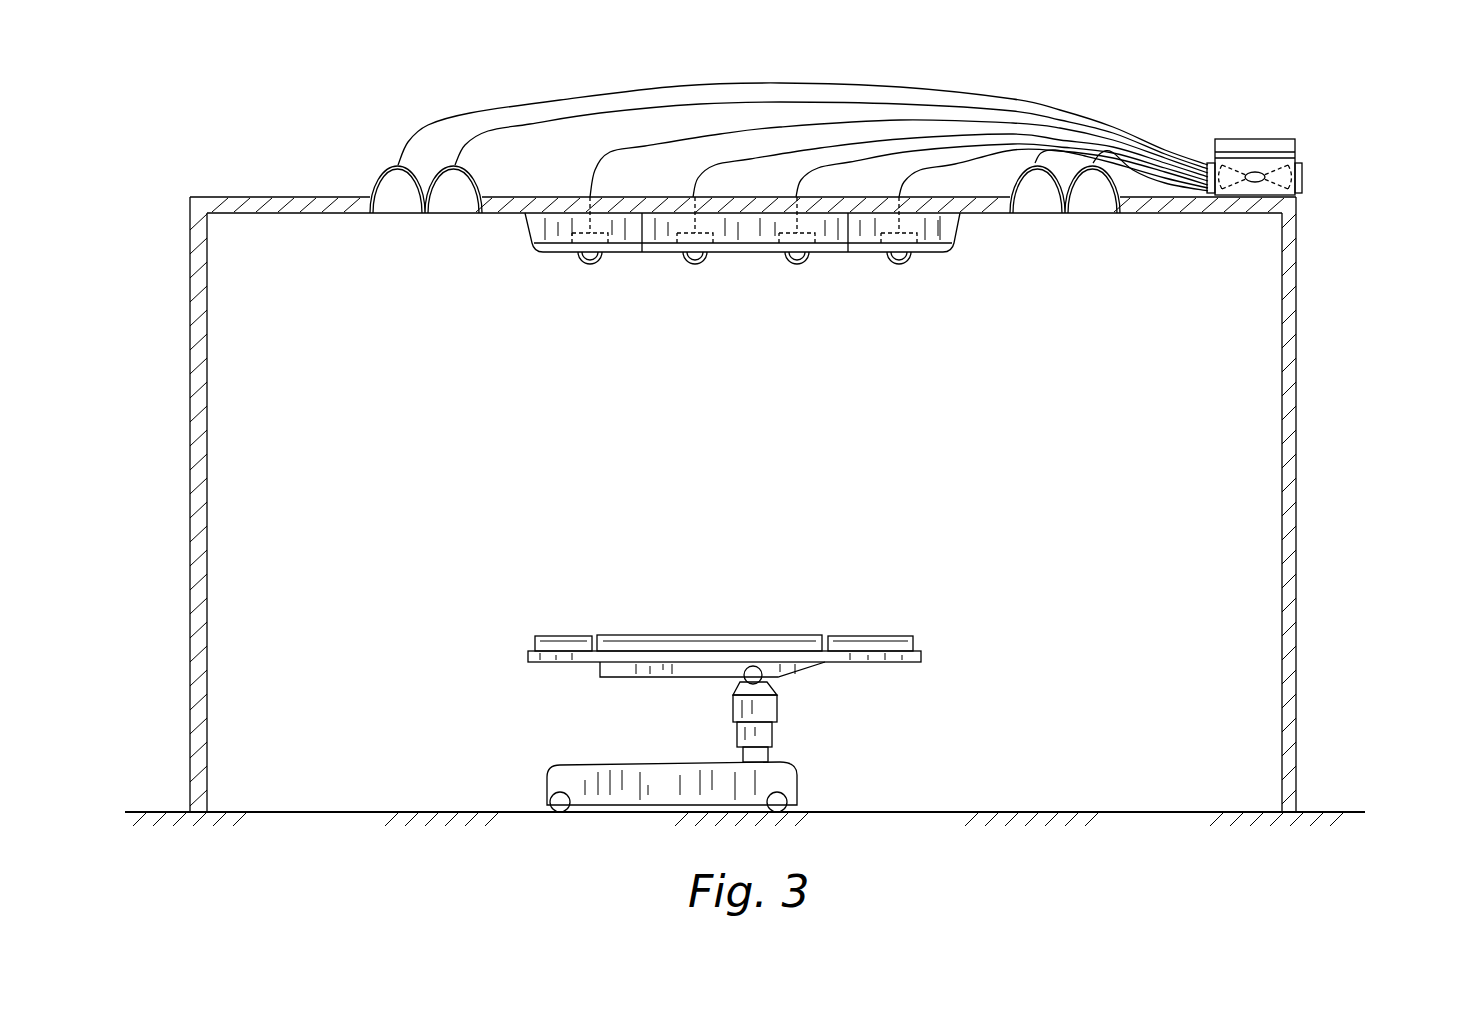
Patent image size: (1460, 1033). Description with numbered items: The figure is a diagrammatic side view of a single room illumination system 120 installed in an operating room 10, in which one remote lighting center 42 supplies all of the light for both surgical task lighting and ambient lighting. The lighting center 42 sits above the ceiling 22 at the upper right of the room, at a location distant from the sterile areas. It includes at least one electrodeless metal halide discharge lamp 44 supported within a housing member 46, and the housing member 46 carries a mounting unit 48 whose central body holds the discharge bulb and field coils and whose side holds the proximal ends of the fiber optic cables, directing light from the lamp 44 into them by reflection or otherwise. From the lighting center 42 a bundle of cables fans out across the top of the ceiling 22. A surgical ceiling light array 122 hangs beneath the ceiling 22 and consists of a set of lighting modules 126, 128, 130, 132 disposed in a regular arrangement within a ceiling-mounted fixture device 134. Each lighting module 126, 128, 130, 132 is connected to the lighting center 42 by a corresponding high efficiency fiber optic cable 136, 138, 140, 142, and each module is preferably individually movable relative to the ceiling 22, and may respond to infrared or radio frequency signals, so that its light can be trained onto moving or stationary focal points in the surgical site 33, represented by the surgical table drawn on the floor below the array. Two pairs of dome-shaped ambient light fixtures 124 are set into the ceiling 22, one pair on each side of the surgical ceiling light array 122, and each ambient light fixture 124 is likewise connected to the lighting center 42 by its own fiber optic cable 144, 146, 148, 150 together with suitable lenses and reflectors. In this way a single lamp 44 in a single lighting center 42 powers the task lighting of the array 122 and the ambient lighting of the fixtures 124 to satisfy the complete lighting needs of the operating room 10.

The operating room 10 is at (408, 581).
The ceiling 22 is at (1195, 213).
The surgical site 33 is at (960, 600).
The lighting center 42 is at (1306, 126).
The metal halide discharge lamp 44 is at (1257, 173).
The housing member 46 is at (1215, 148).
The mounting unit 48 is at (1237, 162).
The room illumination system 120 is at (724, 323).
The surgical ceiling light array 122 is at (742, 304).
The ambient light fixtures 124 is at (457, 230).
The lighting module 126 is at (588, 265).
The lighting module 128 is at (692, 265).
The lighting module 130 is at (797, 265).
The lighting module 132 is at (903, 265).
The ceiling-mounted fixture device 134 is at (750, 232).
The fiber optic cable 136 is at (647, 147).
The fiber optic cable 138 is at (735, 158).
The fiber optic cable 140 is at (840, 163).
The fiber optic cable 142 is at (947, 160).
The fiber optic cable 144 is at (445, 122).
The fiber optic cable 146 is at (550, 120).
The fiber optic cable 148 is at (1053, 147).
The fiber optic cable 150 is at (1132, 173).